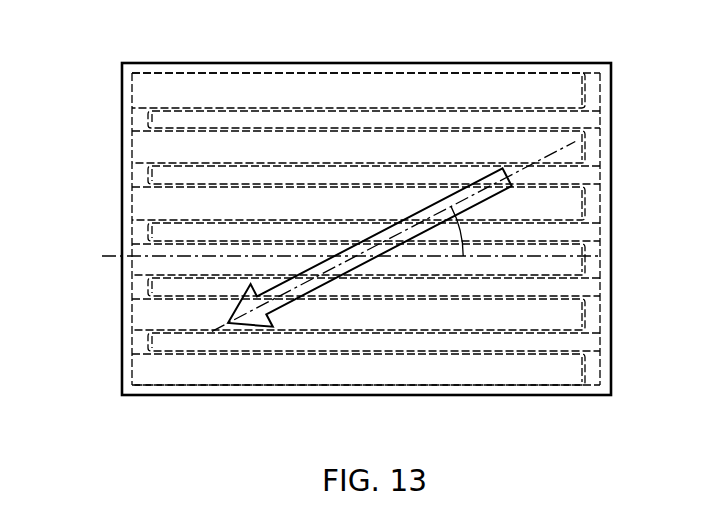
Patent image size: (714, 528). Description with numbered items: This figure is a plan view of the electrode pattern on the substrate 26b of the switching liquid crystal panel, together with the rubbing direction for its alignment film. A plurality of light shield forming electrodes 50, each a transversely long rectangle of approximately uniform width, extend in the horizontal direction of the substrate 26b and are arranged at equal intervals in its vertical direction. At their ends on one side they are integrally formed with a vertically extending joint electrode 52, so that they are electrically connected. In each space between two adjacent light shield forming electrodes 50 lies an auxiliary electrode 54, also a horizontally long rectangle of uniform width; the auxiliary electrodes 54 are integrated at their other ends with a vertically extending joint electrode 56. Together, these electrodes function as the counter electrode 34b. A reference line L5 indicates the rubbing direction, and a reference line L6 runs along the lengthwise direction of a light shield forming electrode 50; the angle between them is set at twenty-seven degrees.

The counter electrode 34b is at (133, 72).
The substrate 26b is at (603, 63).
The light shield forming electrode 50 is at (565, 94).
The joint electrode 52 is at (142, 176).
The auxiliary electrode 54 is at (162, 120).
The joint electrode 56 is at (592, 268).
The reference line L5 is at (553, 154).
The reference line L6 is at (580, 254).